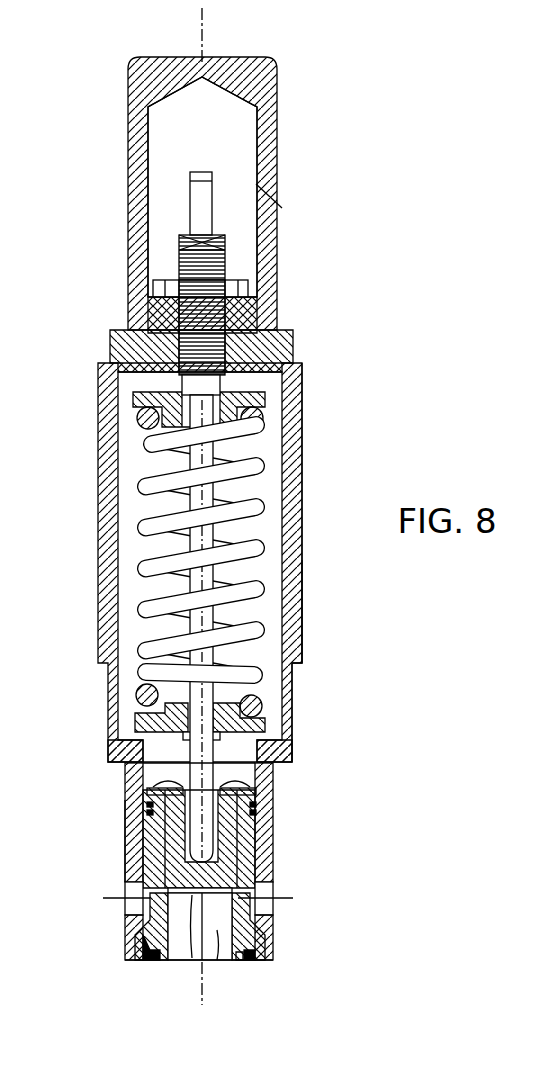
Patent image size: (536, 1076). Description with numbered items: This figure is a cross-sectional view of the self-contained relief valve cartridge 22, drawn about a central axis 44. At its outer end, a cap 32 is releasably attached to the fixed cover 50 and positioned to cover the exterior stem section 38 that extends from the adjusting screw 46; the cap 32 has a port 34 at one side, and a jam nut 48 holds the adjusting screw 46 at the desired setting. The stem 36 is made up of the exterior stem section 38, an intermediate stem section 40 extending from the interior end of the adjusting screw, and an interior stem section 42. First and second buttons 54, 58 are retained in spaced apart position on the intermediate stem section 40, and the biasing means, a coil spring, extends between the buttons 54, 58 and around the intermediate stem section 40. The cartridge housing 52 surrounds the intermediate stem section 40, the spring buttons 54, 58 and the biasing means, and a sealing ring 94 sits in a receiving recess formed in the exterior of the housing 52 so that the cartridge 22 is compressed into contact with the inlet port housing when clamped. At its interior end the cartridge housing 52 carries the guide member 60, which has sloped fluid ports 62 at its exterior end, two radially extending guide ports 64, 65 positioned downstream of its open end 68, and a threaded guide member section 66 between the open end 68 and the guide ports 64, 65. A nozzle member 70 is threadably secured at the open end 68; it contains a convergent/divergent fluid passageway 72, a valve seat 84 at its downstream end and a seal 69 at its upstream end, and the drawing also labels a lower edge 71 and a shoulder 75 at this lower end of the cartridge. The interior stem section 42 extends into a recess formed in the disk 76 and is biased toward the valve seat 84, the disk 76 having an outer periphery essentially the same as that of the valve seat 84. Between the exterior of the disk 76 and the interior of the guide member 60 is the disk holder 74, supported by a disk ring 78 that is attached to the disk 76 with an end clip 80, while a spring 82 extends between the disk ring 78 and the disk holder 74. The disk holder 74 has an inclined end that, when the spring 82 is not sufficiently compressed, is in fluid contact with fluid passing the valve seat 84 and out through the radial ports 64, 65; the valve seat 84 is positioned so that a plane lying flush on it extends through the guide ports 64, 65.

The cartridge 22 is at (302, 459).
The cap 32 is at (279, 106).
The port 34 is at (268, 198).
The stem 36 is at (218, 621).
The exterior stem section 38 is at (212, 178).
The intermediate stem section 40 is at (218, 449).
The interior stem section 42 is at (243, 792).
The longitudinal axis 44 is at (204, 38).
The adjusting screw 46 is at (252, 334).
The jam nut 48 is at (248, 283).
The fixed cover 50 is at (112, 341).
The cartridge housing 52 is at (100, 427).
The first button 54 is at (266, 399).
The second button 58 is at (262, 729).
The guide member 60 is at (275, 827).
The sloped fluid ports 62 is at (290, 752).
The guide port 64 is at (273, 894).
The guide port 65 is at (132, 905).
The threaded guide member section 66 is at (141, 962).
The open end 68 is at (265, 962).
The seal 69 is at (246, 962).
The nozzle member 70 is at (270, 933).
The edge 71 is at (243, 961).
The convergent/divergent fluid passageway 72 is at (218, 932).
The disk holder 74 is at (247, 851).
The shoulder 75 is at (145, 937).
The disk 76 is at (132, 851).
The disk ring 78 is at (156, 789).
The end clip 80 is at (168, 779).
The spring 82 is at (152, 809).
The valve seat 84 is at (193, 900).
The sealing ring 94 is at (303, 627).